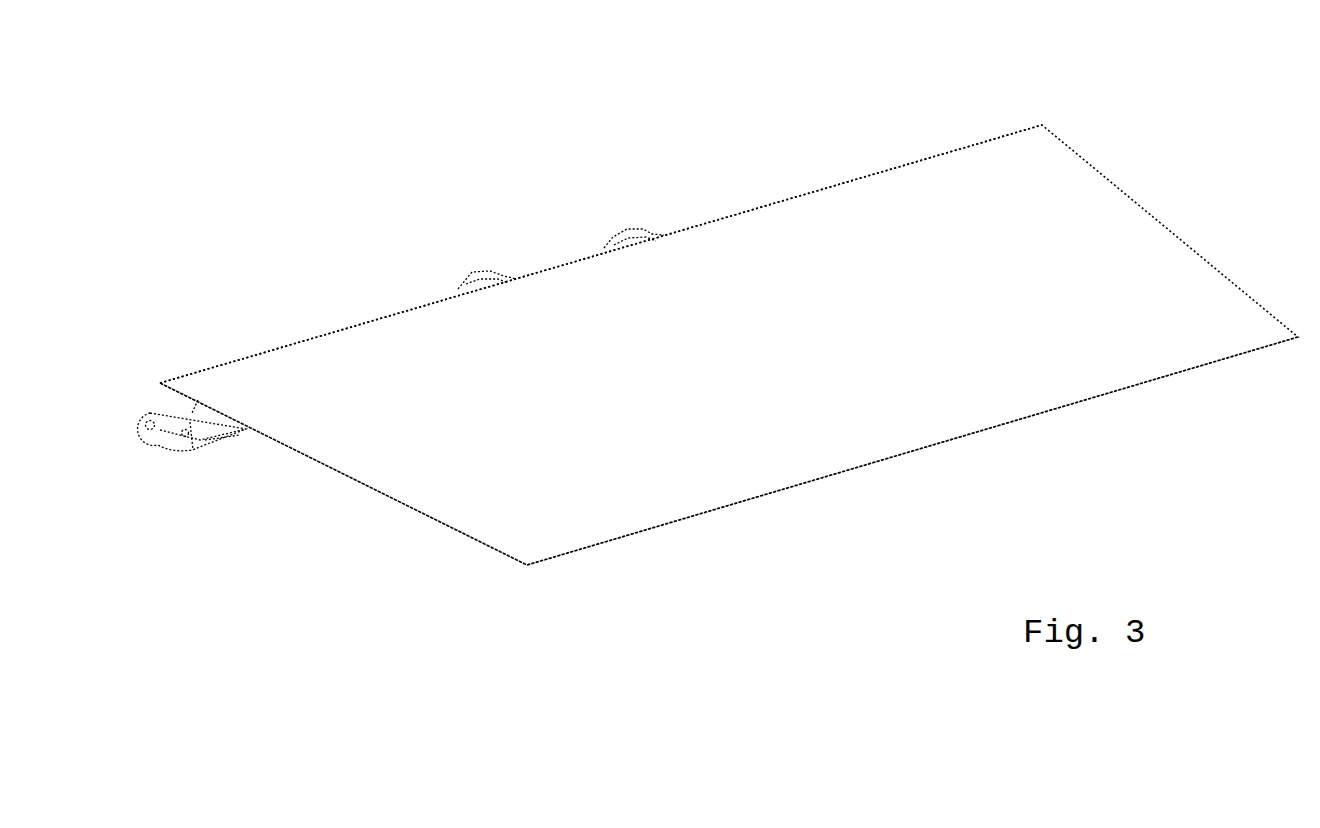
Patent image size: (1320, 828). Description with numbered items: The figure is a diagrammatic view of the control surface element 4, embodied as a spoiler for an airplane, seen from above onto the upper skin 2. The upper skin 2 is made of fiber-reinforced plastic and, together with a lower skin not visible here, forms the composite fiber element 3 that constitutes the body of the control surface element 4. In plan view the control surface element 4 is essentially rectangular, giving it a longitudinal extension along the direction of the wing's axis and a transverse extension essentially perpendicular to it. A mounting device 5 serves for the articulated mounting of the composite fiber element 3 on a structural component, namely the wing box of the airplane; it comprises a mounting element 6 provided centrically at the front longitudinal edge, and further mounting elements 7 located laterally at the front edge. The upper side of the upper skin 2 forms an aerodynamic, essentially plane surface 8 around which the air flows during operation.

The upper skin 2 is at (353, 363).
The composite fiber element 3 is at (305, 487).
The control surface element 4 is at (434, 568).
The mounting device 5 is at (485, 265).
The mounting element 6 is at (625, 228).
The further mounting elements 7 is at (149, 408).
The aerodynamic surface 8 is at (849, 227).